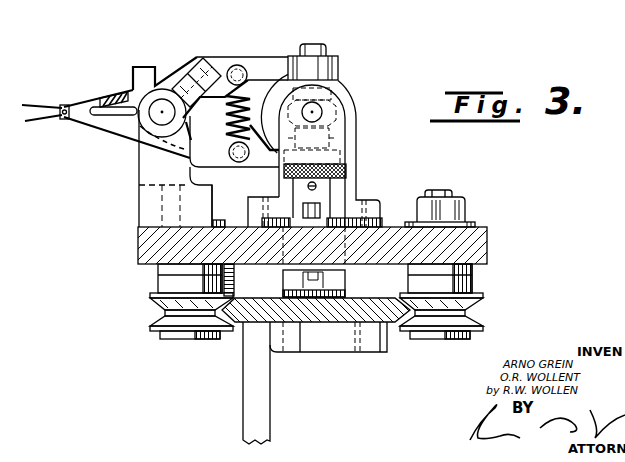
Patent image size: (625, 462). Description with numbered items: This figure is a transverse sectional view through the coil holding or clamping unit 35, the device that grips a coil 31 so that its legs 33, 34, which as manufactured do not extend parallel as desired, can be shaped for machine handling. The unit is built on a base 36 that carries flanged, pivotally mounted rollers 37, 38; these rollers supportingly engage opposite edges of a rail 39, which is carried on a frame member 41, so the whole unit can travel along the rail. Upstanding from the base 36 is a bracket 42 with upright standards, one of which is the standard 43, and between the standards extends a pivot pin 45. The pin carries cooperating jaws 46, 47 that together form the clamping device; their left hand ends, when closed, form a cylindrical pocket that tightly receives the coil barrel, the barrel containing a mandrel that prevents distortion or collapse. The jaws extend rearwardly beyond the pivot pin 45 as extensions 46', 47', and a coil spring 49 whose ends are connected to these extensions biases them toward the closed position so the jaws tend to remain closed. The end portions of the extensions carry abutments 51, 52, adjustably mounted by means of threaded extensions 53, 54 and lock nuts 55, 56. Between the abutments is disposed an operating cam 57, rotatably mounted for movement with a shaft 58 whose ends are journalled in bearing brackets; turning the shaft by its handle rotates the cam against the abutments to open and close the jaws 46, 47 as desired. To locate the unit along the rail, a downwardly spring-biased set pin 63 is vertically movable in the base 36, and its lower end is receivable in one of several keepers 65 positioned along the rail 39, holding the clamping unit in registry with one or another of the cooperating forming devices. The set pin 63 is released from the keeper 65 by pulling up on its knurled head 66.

The coil 31 is at (63, 121).
The leg 33 is at (36, 122).
The leg 34 is at (48, 106).
The coil holding or clamping unit 35 is at (138, 249).
The base 36 is at (485, 246).
The flanged roller 37 is at (152, 298).
The flanged roller 38 is at (476, 296).
The rail 39 is at (325, 330).
The frame member 41 is at (256, 404).
The bracket 42 is at (140, 217).
The upright standard 43 is at (140, 173).
The pivot pin 45 is at (160, 116).
The jaw 46 is at (171, 105).
The jaw extension 46' is at (233, 199).
The jaw 47 is at (107, 130).
The jaw extension 47' is at (203, 65).
The coil spring 49 is at (265, 74).
The abutment 51 is at (357, 132).
The abutment 52 is at (333, 90).
The threaded extension 53 is at (343, 183).
The threaded extension 54 is at (322, 44).
The lock nut 55 is at (352, 168).
The lock nut 56 is at (333, 56).
The operating cam 57 is at (358, 98).
The shaft 58 is at (322, 113).
The set pin 63 is at (272, 267).
The keeper 65 is at (347, 277).
The knurled head 66 is at (335, 165).